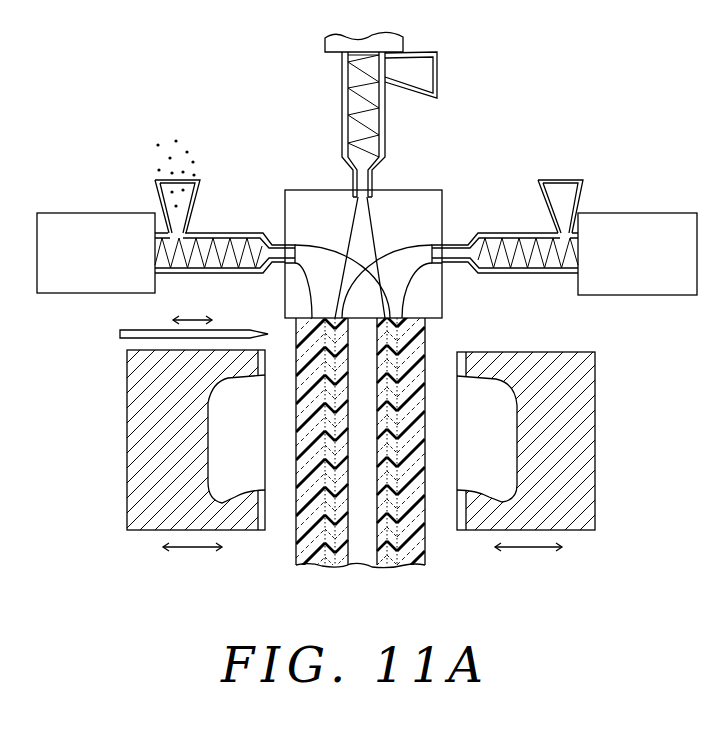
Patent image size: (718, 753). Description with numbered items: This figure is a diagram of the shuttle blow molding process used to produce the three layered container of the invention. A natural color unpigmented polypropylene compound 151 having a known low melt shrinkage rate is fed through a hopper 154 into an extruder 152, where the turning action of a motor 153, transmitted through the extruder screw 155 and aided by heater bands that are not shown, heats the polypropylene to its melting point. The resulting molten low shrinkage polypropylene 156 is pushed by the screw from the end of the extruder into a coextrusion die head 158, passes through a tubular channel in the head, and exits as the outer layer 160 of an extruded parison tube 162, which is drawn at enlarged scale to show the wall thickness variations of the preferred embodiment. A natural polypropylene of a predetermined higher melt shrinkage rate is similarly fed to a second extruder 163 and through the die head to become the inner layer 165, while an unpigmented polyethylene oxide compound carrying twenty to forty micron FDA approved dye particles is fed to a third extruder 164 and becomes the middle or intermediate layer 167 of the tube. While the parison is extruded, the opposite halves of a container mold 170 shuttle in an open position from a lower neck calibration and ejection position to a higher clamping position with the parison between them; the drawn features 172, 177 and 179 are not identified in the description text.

The natural color unpigmented polypropylene compound 151 is at (200, 148).
The extruder 152 is at (225, 275).
The motor 153 is at (106, 257).
The hopper 154 is at (200, 197).
The extruder screw 155 is at (240, 248).
The molten low shrinkage polypropylene 156 is at (295, 245).
The coextrusion die head 158 is at (415, 190).
The outer layer 160 is at (293, 538).
The extruded parison tube 162 is at (310, 566).
The second extruder 163 is at (386, 137).
The third extruder 164 is at (512, 273).
The inner layer 165 is at (338, 568).
The middle or intermediate layer 167 is at (329, 567).
The container mold 170 is at (130, 400).
The lower cavity portion 172 is at (258, 490).
The upper cavity portion 177 is at (258, 378).
The cutting blade 179 is at (130, 330).